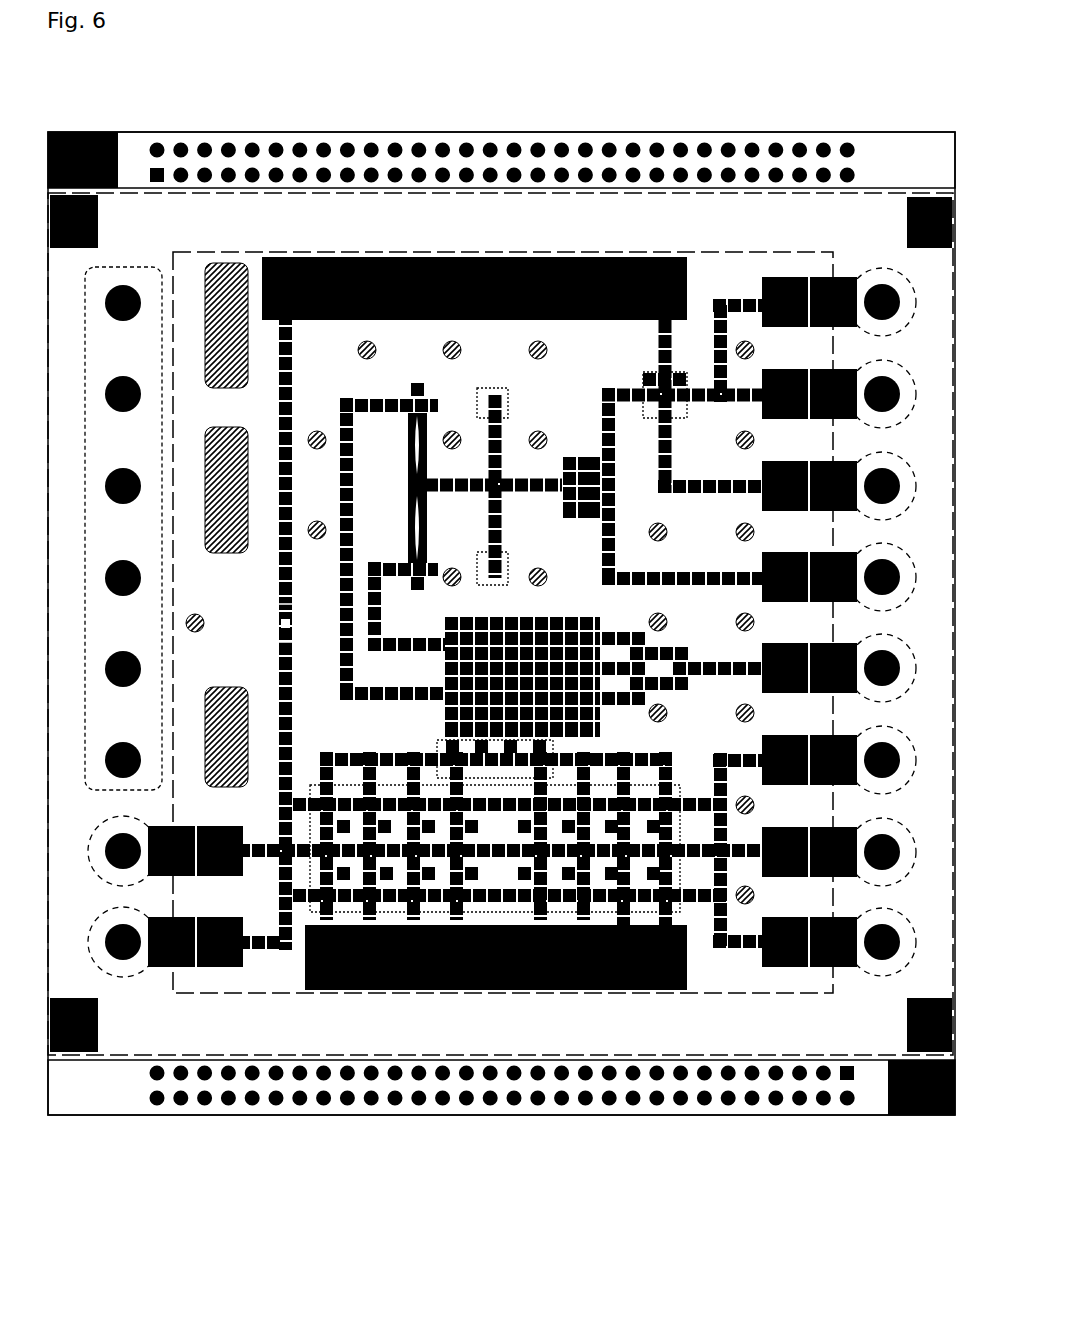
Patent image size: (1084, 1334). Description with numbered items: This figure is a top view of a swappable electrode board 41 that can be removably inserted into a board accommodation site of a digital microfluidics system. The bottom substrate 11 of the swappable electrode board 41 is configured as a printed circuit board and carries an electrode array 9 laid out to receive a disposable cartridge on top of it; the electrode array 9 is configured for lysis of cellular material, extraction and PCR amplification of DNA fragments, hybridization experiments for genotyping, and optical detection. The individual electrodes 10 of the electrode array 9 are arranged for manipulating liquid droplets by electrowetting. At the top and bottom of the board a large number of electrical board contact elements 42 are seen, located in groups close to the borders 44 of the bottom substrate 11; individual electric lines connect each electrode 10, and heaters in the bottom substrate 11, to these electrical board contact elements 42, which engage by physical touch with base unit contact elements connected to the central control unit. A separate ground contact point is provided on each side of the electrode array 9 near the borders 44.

The electrode array 9 is at (400, 593).
The electrode 10 is at (446, 965).
The bottom substrate 11 is at (470, 621).
The swappable electrode board 41 is at (838, 117).
The electrical board contact element 42 is at (447, 168).
The border 44 is at (500, 657).